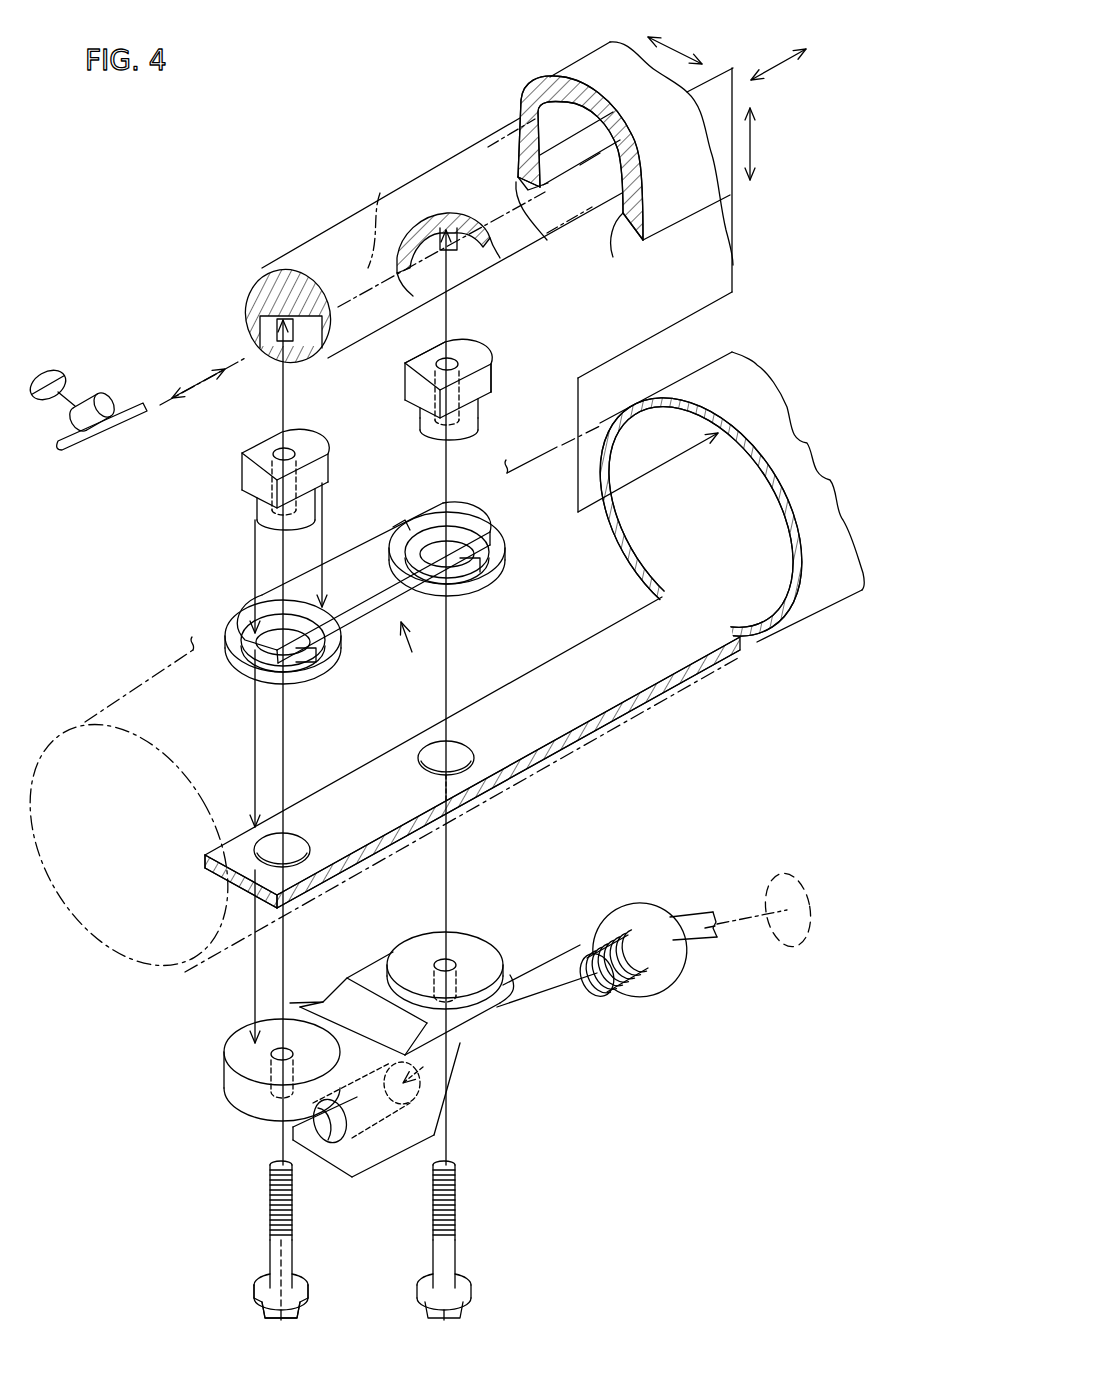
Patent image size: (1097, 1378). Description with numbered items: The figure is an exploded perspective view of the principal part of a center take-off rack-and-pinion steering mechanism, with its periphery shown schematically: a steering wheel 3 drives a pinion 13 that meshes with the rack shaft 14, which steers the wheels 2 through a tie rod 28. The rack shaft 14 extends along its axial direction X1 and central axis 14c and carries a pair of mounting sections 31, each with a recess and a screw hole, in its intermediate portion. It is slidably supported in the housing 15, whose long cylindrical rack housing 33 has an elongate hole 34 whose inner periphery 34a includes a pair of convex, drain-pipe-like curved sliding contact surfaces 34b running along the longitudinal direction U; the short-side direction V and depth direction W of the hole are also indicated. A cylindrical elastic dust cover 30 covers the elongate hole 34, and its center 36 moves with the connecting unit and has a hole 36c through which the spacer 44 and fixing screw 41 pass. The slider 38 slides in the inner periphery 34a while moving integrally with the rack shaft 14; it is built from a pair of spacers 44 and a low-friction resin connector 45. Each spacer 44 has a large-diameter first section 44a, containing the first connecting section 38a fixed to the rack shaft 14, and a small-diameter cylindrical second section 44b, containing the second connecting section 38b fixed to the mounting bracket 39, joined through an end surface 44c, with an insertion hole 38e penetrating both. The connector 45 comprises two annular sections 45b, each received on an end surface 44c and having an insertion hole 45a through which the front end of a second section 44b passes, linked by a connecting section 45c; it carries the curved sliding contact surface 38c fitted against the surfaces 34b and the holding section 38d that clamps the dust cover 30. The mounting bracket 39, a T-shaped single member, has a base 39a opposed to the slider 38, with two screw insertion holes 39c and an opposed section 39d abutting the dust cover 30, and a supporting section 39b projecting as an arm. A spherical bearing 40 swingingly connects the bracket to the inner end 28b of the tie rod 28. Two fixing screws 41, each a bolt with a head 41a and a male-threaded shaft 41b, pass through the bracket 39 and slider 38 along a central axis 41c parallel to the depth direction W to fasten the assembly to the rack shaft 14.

The steering wheels 2 is at (805, 940).
The steering wheel 3 is at (58, 375).
The pinion 13 is at (100, 398).
The rack shaft 14 is at (347, 222).
The central axis of the rack shaft 14c is at (379, 215).
The housing 15 is at (521, 92).
The tie rod 28 is at (688, 904).
The inner end of the tie rod 28b is at (703, 937).
The dust cover 30 is at (684, 378).
The mounting section 31 is at (431, 212).
The rack housing 33 is at (682, 187).
The elongate hole 34 is at (607, 198).
The inner periphery of the elongate hole 34a is at (600, 193).
The curved sliding contact surface 34b is at (575, 186).
The center of the dust cover 36 is at (818, 582).
The hole 36c is at (297, 847).
The slider 38 is at (190, 603).
The first connecting section 38a is at (480, 350).
The second connecting section 38b is at (470, 435).
The curved sliding contact surface 38c is at (262, 600).
The holding section 38d is at (297, 677).
The insertion hole 38e is at (449, 358).
The mounting bracket 39 is at (507, 970).
The base 39a is at (463, 1015).
The supporting section 39b is at (372, 1148).
The screw insertion hole 39c is at (450, 958).
The opposed section 39d is at (452, 940).
The spherical bearing 40 is at (665, 990).
The fixing screw 41 is at (298, 1245).
The head 41a is at (263, 1310).
The shaft 41b is at (275, 1243).
The central axis of the fixing screw 41c is at (280, 1258).
The spacer 44 is at (403, 372).
The first section 44a is at (497, 370).
The second section 44b is at (482, 410).
The end surface 44c is at (495, 392).
The connector 45 is at (415, 652).
The insertion hole 45a is at (243, 676).
The annular section 45b is at (232, 643).
The connecting section 45c is at (347, 557).
The axial direction of the rack shaft X1 is at (198, 408).
The longitudinal direction of the elongate hole U is at (778, 84).
The short-side direction of the elongate hole V is at (690, 41).
The depth direction of the elongate hole W is at (765, 145).